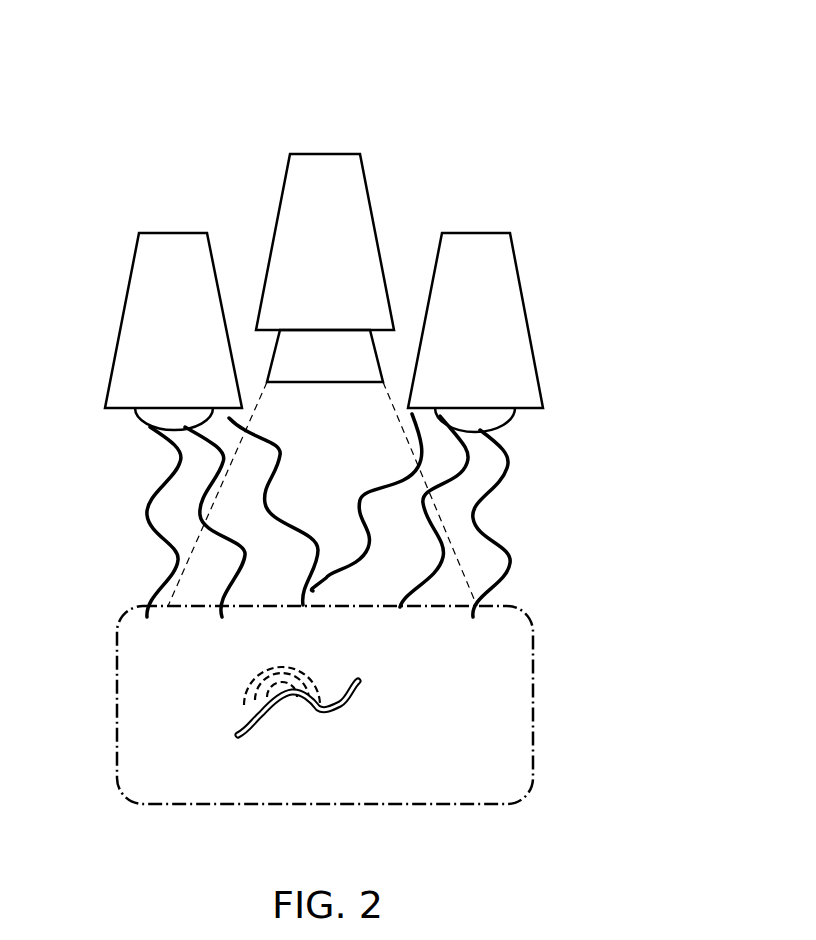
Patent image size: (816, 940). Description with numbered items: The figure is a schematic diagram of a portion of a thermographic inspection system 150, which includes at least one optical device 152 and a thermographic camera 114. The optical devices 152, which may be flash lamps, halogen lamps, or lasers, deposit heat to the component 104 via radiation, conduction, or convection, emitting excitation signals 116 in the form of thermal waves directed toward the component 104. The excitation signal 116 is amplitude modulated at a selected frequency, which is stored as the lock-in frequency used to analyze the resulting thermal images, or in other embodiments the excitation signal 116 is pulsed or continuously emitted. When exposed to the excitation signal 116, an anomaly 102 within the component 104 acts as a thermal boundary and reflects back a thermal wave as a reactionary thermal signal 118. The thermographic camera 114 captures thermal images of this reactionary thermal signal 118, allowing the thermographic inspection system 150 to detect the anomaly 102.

The thermographic inspection system 150 is at (203, 60).
The thermographic camera 114 is at (326, 152).
The optical device 152 is at (123, 312).
The excitation signal 116 is at (184, 545).
The component 104 is at (408, 808).
The reactionary thermal signal 118 is at (228, 678).
The anomaly 102 is at (231, 738).